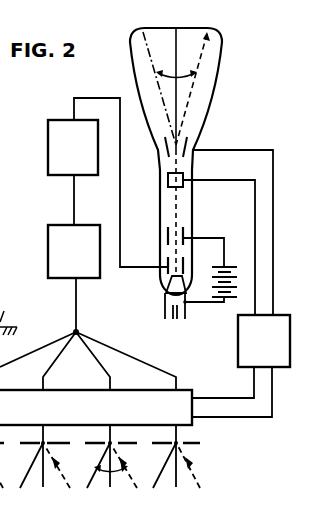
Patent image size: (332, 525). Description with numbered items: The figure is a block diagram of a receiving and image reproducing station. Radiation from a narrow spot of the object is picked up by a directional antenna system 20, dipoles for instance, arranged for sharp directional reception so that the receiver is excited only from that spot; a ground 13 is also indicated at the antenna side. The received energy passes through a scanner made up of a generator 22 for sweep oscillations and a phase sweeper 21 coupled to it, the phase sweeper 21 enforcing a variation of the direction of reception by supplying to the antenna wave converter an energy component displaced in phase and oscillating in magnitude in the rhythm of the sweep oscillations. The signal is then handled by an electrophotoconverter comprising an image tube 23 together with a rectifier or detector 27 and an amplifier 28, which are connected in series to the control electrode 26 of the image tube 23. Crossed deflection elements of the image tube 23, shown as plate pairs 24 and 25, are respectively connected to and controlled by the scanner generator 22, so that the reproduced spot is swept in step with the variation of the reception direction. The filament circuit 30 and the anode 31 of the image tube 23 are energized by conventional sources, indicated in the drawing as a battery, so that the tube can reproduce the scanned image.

The ground 13 is at (11, 319).
The directional antenna system 20 is at (28, 445).
The phase sweeper 21 is at (83, 419).
The generator for sweep oscillations 22 is at (272, 353).
The image tube 23 is at (205, 73).
The deflection plate pair 24 is at (187, 150).
The deflection plate pair 25 is at (185, 178).
The control electrode 26 is at (186, 268).
The rectifier or detector 27 is at (82, 262).
The amplifier 28 is at (81, 159).
The filament circuit 30 is at (165, 295).
The anode 31 is at (185, 235).